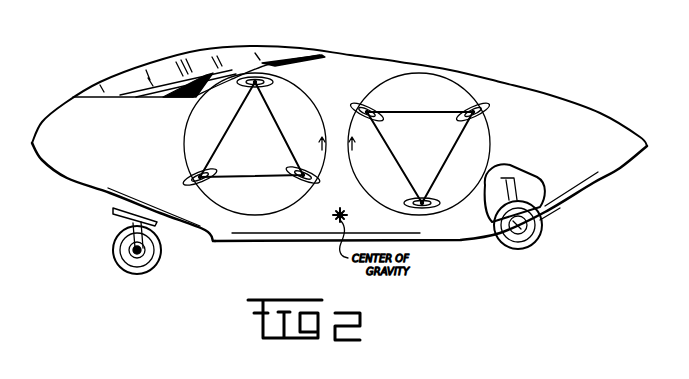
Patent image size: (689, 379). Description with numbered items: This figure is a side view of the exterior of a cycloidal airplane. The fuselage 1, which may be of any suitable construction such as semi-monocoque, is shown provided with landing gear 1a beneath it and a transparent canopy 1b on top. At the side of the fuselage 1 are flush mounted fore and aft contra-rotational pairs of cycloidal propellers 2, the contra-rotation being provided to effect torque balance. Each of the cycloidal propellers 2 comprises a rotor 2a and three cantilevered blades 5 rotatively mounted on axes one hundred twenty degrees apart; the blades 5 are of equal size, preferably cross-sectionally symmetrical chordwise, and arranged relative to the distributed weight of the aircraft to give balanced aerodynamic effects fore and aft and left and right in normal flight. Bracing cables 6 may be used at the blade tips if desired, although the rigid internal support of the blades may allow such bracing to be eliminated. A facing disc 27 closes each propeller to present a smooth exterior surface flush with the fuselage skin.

The fuselage 1 is at (566, 108).
The landing gear 1a is at (512, 248).
The transparent canopy 1b is at (158, 57).
The cycloidal propellers 2 is at (167, 148).
The rotor 2a is at (284, 197).
The cantilevered blades 5 is at (216, 168).
The bracing cables 6 is at (280, 127).
The facing disc 27 is at (254, 202).